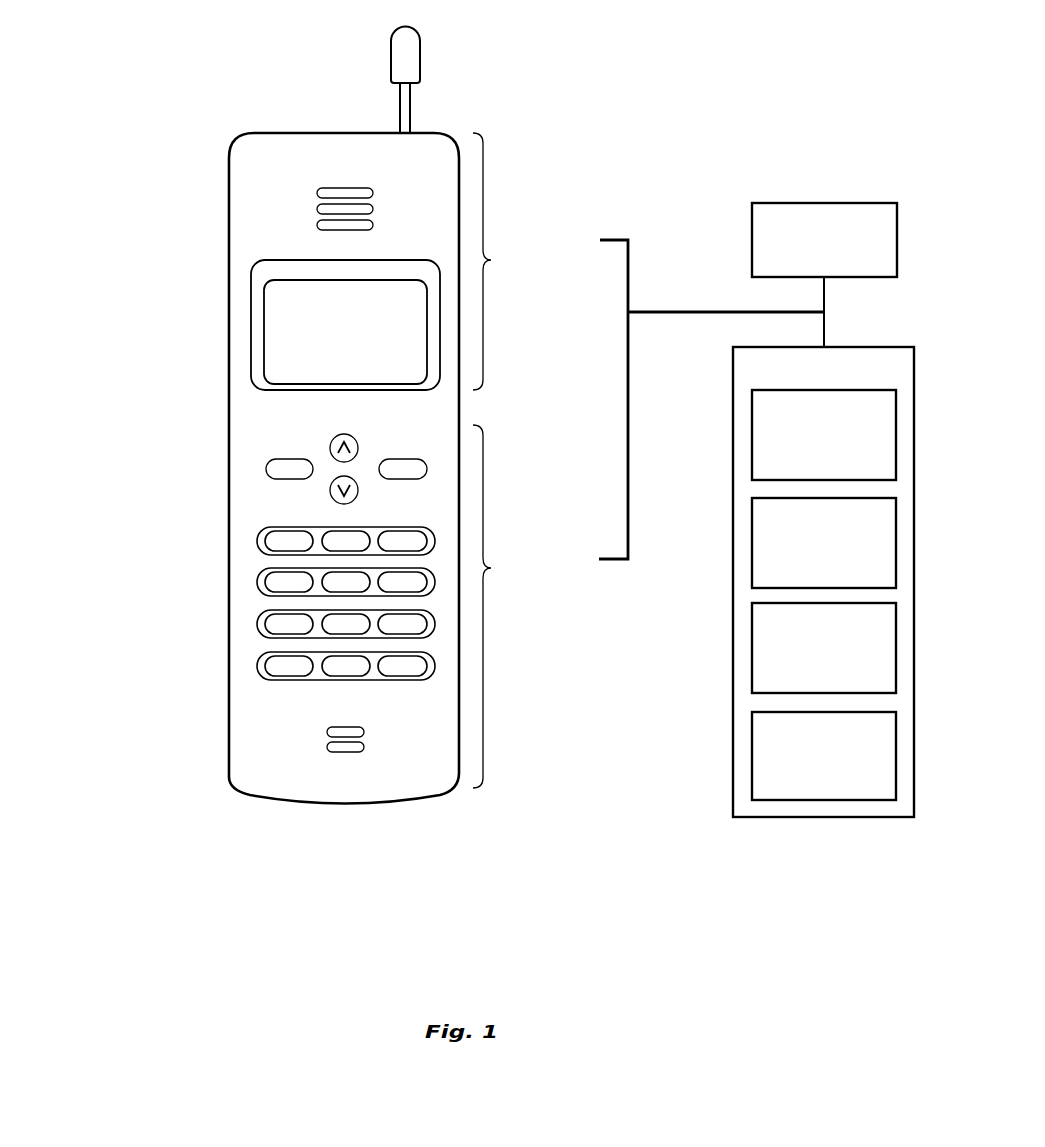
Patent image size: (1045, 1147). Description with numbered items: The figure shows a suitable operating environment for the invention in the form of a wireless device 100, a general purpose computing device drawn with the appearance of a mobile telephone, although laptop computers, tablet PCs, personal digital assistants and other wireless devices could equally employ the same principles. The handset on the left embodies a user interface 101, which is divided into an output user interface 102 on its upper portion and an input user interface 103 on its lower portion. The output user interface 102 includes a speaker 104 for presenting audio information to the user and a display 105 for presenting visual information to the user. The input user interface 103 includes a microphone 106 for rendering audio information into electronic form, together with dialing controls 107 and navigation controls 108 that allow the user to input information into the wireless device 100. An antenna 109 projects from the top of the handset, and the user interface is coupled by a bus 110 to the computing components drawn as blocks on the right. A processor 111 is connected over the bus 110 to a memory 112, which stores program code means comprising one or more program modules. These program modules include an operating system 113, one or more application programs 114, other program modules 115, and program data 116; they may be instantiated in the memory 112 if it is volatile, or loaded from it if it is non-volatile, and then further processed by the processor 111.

The wireless device 100 is at (648, 109).
The user interface 101 is at (463, 804).
The output user interface 102 is at (525, 261).
The input user interface 103 is at (525, 606).
The speaker 104 is at (220, 204).
The display 105 is at (220, 338).
The microphone 106 is at (220, 738).
The dialing controls 107 is at (222, 682).
The navigation controls 108 is at (220, 462).
The antenna 109 is at (449, 93).
The bus 110 is at (657, 311).
The processor 111 is at (812, 258).
The memory 112 is at (868, 378).
The operating system 113 is at (837, 461).
The application programs 114 is at (837, 570).
The program modules 115 is at (837, 673).
The program data 116 is at (837, 780).